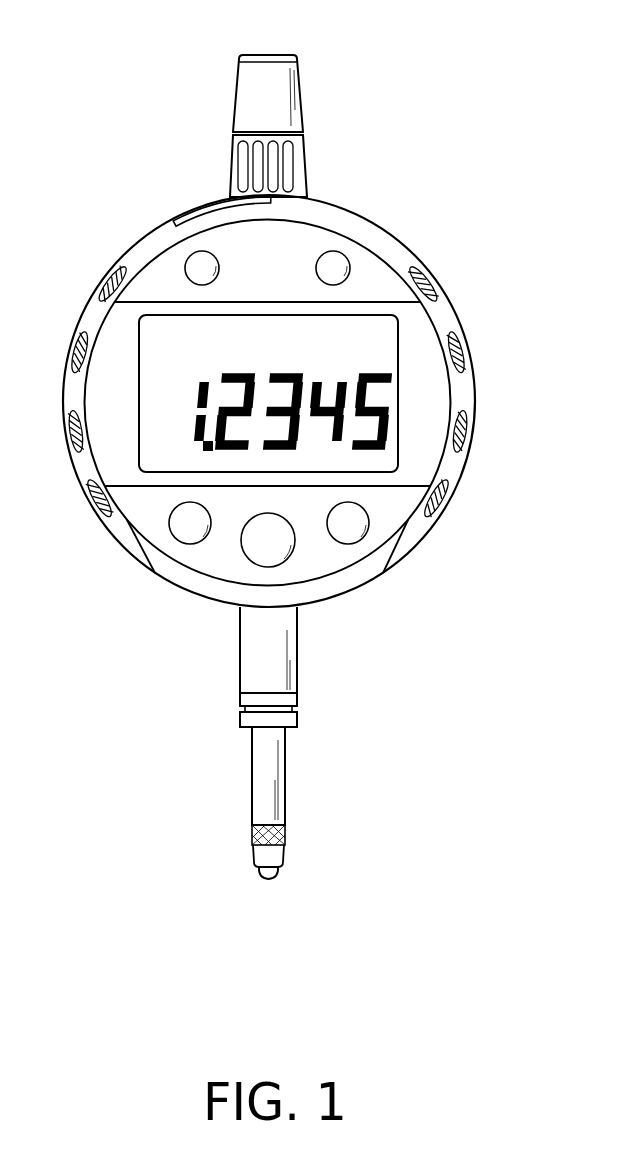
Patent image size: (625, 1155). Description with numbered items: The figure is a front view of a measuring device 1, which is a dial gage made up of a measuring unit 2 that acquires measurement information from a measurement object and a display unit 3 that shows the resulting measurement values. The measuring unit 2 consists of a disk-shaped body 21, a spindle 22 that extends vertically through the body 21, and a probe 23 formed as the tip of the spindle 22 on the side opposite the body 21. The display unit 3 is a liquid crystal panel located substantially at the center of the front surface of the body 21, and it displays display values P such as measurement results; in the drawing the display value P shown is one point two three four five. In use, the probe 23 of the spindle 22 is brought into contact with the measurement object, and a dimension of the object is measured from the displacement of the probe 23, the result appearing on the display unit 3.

The measuring device 1 is at (404, 98).
The measuring unit 2 is at (355, 665).
The body 21 is at (155, 228).
The spindle 22 is at (270, 777).
The probe 23 is at (283, 873).
The display unit 3 is at (371, 313).
The display value P is at (388, 358).